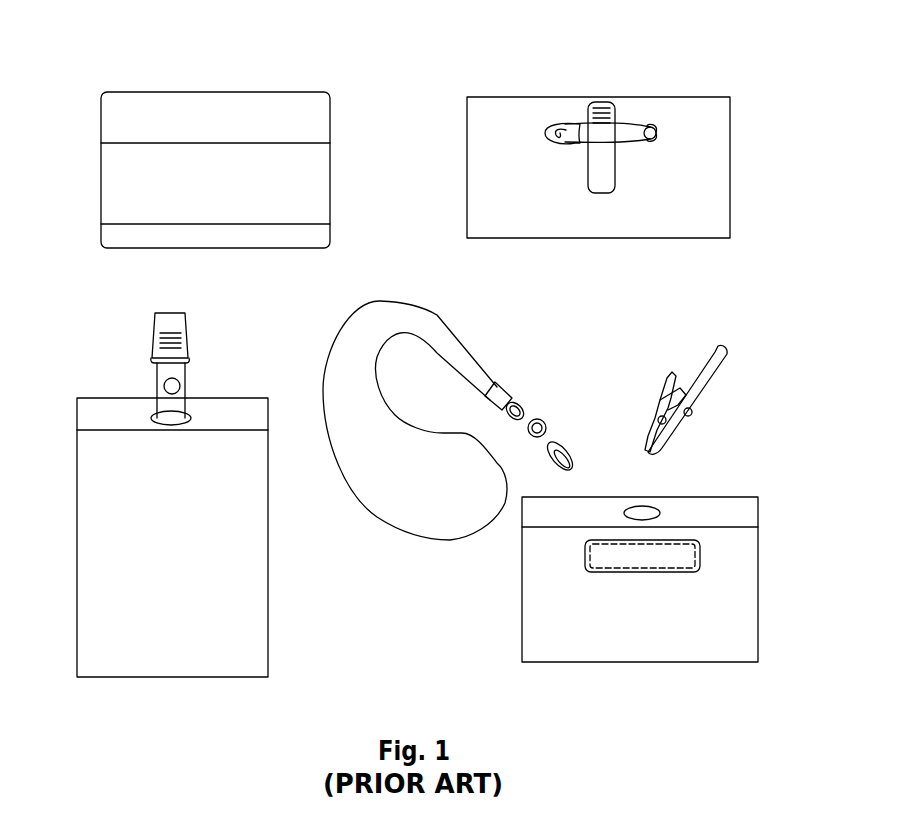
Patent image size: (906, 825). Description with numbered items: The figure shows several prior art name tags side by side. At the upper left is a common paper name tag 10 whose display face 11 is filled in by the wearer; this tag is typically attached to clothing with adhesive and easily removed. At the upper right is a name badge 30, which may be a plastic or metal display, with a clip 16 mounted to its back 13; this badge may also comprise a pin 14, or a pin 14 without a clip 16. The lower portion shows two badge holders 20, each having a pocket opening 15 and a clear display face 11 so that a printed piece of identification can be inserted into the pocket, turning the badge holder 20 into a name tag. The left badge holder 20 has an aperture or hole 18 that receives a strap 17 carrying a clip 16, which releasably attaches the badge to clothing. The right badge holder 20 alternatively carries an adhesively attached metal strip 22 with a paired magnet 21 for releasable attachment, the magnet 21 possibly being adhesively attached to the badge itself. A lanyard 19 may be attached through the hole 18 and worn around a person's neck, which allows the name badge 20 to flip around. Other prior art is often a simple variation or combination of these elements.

The paper name tag 10 is at (183, 70).
The display face 11 is at (130, 196).
The back 13 is at (690, 197).
The pin 14 is at (660, 128).
The pocket opening 15 is at (103, 432).
The clip 16 is at (598, 167).
The strap 17 is at (177, 370).
The hole 18 is at (172, 417).
The lanyard 19 is at (386, 540).
The badge holder 20 is at (96, 375).
The magnet 21 is at (662, 557).
The metal strip 22 is at (655, 573).
The name badge 30 is at (533, 75).